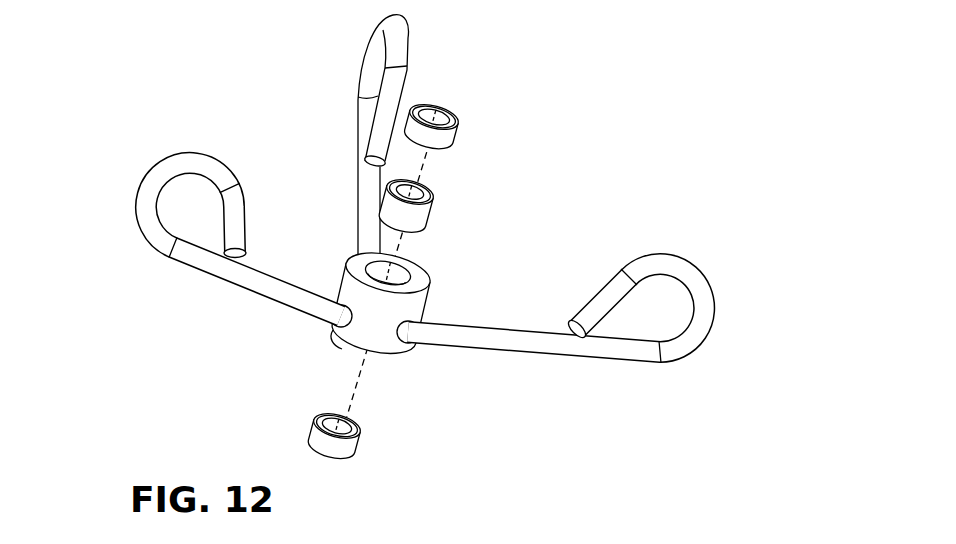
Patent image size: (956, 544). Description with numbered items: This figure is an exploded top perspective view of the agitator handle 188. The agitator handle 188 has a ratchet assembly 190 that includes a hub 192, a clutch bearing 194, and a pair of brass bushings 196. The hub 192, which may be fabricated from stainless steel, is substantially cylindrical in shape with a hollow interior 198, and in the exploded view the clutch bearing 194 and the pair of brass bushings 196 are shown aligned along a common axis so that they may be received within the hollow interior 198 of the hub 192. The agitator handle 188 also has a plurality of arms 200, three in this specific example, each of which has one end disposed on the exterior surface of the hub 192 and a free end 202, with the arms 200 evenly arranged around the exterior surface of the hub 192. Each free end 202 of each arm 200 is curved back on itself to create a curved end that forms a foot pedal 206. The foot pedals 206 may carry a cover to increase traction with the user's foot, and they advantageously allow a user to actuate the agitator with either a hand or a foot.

The agitator handle 188 is at (697, 100).
The ratchet assembly 190 is at (453, 265).
The hub 192 is at (331, 354).
The clutch bearing 194 is at (436, 195).
The brass bushings 196 is at (453, 117).
The hollow interior 198 is at (380, 272).
The arms 200 is at (361, 118).
The free end 202 is at (567, 317).
The foot pedal 206 is at (144, 149).